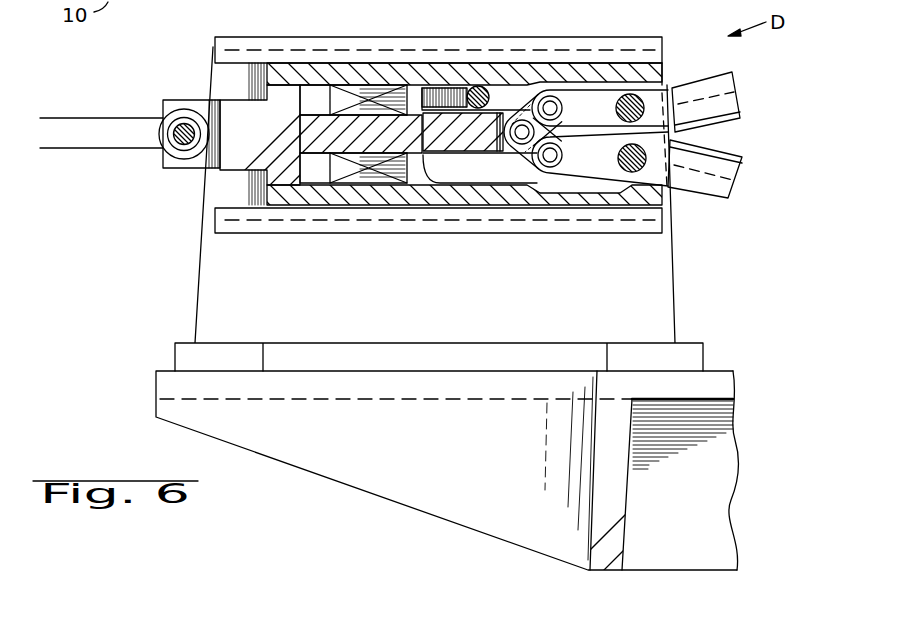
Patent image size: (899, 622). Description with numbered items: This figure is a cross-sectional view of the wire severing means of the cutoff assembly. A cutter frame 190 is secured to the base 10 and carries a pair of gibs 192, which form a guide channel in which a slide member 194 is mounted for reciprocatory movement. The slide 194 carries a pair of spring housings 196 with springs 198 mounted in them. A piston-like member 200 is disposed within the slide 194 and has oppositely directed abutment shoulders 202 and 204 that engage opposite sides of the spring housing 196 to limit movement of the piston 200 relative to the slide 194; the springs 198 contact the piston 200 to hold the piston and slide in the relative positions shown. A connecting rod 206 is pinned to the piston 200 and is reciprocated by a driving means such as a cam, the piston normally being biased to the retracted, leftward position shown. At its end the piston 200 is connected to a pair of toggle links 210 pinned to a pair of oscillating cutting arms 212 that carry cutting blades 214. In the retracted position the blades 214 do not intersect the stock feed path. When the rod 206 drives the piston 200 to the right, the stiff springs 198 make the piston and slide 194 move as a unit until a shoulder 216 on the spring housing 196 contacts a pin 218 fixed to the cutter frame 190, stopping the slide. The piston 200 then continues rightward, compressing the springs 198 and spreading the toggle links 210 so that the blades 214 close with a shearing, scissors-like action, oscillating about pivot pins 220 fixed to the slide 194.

The base 10 is at (723, 382).
The cutter frame 190 is at (645, 292).
The gibs 192 is at (580, 40).
The slide member 194 is at (467, 200).
The spring housings 196 is at (368, 88).
The springs 198 is at (378, 108).
The piston-like member 200 is at (275, 145).
The abutment shoulder 202 is at (549, 135).
The abutment shoulder 204 is at (420, 118).
The connecting rod 206 is at (97, 135).
The toggle links 210 is at (556, 131).
The oscillating cutting arms 212 is at (663, 98).
The cutting blades 214 is at (727, 128).
The shoulder 216 is at (435, 87).
The pin 218 is at (480, 88).
The pivot pins 220 is at (628, 122).